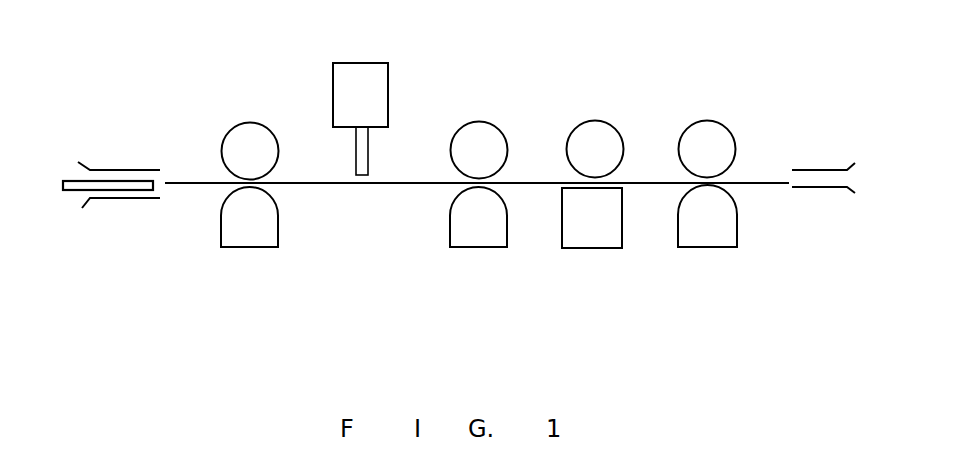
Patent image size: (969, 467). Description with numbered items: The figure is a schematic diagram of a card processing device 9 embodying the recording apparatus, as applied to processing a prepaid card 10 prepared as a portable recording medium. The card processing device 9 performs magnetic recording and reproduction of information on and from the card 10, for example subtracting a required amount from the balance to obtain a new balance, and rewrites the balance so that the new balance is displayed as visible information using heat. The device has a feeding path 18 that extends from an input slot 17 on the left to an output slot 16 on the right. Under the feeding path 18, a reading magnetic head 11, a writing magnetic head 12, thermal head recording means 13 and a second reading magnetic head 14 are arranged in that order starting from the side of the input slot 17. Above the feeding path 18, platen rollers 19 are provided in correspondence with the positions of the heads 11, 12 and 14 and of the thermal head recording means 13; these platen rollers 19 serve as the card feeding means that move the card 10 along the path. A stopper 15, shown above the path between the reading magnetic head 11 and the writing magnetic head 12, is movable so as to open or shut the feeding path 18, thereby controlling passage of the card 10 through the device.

The card processing device 9 is at (131, 84).
The prepaid card 10 is at (68, 191).
The reading magnetic head 11 is at (258, 249).
The writing magnetic head 12 is at (467, 250).
The thermal head recording means 13 is at (583, 250).
The reading magnetic head 14 is at (703, 250).
The stopper 15 is at (400, 52).
The output slot 16 is at (817, 189).
The input slot 17 is at (132, 199).
The feeding path 18 is at (329, 186).
The platen rollers 19 is at (252, 122).